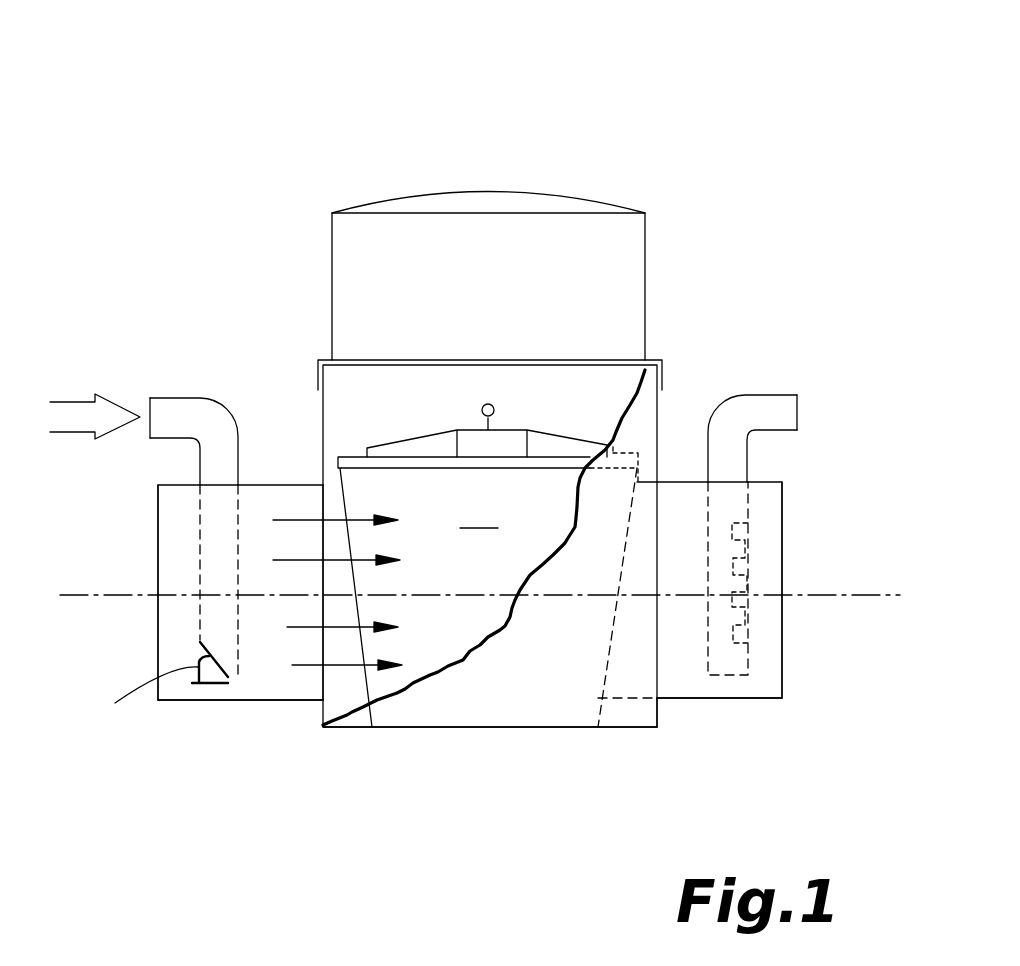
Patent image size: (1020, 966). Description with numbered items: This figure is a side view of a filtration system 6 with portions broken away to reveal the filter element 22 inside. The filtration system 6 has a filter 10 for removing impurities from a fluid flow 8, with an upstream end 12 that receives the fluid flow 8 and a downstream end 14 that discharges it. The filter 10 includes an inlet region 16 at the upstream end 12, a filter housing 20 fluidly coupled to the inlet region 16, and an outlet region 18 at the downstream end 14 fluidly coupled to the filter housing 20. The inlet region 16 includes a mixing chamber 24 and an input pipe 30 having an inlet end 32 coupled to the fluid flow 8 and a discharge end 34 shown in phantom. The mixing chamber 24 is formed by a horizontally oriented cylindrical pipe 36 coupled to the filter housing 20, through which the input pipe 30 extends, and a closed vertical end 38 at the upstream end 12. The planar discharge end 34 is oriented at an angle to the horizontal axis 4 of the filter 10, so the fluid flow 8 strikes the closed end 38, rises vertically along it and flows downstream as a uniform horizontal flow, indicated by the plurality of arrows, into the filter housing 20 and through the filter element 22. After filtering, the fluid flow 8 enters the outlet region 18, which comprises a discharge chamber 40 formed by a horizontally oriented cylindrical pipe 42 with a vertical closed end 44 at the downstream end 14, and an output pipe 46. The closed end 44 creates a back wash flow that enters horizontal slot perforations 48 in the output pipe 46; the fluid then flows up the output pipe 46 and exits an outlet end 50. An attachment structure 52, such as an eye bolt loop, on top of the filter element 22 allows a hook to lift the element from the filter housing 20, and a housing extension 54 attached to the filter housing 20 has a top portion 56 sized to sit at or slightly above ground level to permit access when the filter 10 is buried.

The horizontal axis 4 is at (68, 597).
The filtration system 6 is at (610, 93).
The fluid flow 8 is at (70, 402).
The filter 10 is at (715, 334).
The upstream end 12 is at (158, 702).
The downstream end 14 is at (782, 700).
The inlet region 16 is at (263, 500).
The outlet region 18 is at (737, 700).
The filter housing 20 is at (632, 715).
The filter element 22 is at (488, 587).
The mixing chamber 24 is at (268, 605).
The input pipe 30 is at (196, 406).
The inlet end 32 is at (152, 438).
The discharge end 34 is at (200, 643).
The cylindrical pipe 36 is at (202, 702).
The closed vertical end 38 is at (158, 552).
The discharge chamber 40 is at (758, 618).
The cylindrical pipe 42 is at (688, 700).
The vertical closed end 44 is at (782, 492).
The output pipe 46 is at (740, 405).
The perforations 48 is at (748, 528).
The outlet end 50 is at (798, 405).
The attachment structure 52 is at (500, 410).
The housing extension 54 is at (628, 243).
The top portion 56 is at (560, 200).